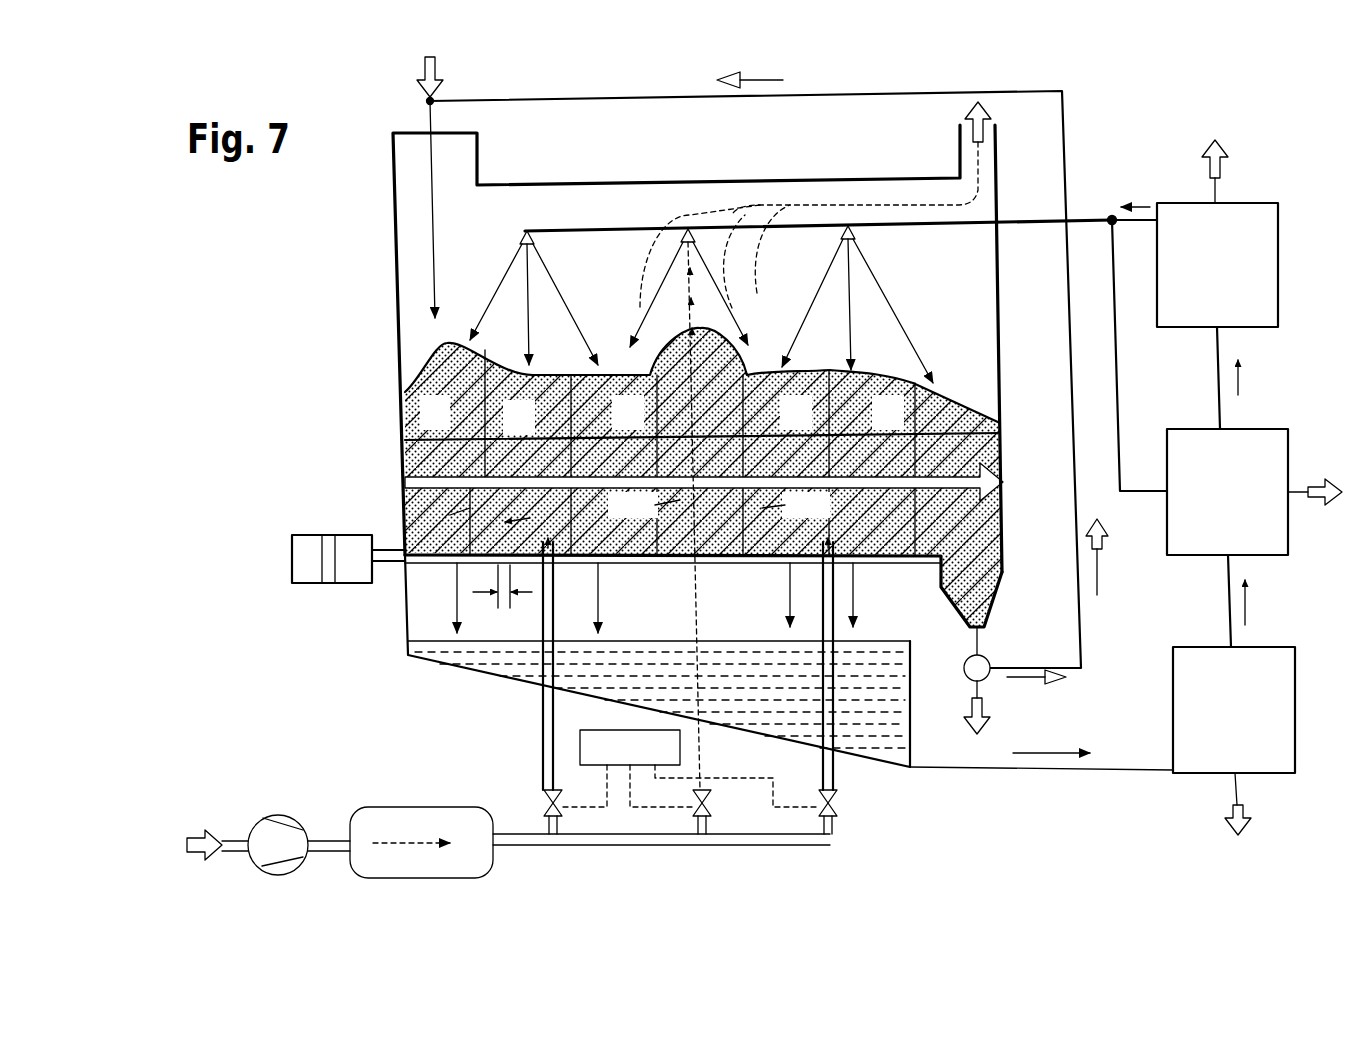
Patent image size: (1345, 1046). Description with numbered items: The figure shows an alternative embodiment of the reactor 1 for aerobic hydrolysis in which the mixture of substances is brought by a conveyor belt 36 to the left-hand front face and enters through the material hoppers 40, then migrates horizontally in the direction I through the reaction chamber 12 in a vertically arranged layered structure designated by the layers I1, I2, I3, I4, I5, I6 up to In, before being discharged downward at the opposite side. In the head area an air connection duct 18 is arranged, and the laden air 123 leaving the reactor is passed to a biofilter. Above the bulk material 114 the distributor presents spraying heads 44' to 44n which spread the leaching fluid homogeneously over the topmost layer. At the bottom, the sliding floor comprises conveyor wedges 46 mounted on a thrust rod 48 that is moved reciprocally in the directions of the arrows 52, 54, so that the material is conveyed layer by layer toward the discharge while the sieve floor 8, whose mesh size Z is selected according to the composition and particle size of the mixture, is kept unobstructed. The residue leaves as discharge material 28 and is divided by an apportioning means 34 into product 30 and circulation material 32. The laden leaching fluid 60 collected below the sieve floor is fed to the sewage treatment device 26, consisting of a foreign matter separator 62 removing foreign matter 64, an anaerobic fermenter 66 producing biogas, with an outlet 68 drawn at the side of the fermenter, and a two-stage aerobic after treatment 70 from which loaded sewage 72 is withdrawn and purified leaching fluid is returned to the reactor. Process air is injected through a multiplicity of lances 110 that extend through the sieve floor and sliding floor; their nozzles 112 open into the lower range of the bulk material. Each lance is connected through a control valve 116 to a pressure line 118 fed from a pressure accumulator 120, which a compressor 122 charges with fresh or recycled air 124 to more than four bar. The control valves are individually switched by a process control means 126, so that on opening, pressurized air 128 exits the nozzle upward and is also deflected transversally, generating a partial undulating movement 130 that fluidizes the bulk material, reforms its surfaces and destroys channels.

The reactor 1 is at (393, 260).
The sieve floor 8 is at (440, 568).
The reaction chamber 12 is at (960, 332).
The air connection duct 18 is at (990, 163).
The sewage treatment device 26 is at (1290, 195).
The discharge material 28 is at (1002, 575).
The product 30 is at (995, 712).
The circulation material 32 is at (1100, 565).
The apportioning means 34 is at (982, 662).
The conveyor belt 36 is at (487, 100).
The material hopper 40 is at (433, 298).
The spraying head 44' is at (783, 290).
The spraying head 44n is at (856, 240).
The conveyor wedge 46 is at (630, 568).
The thrust rod 48 is at (576, 565).
The arrow 52 is at (442, 522).
The arrow 54 is at (533, 515).
The laden leaching fluid 60 is at (912, 710).
The foreign matter separator 62 is at (1249, 734).
The foreign matter 64 is at (1225, 825).
The anaerobic fermenter 66 is at (1242, 514).
The outlet 68 is at (1320, 508).
The two-stage aerobic after treatment 70 is at (1232, 288).
The loaded sewage 72 is at (1205, 165).
The lance 110 is at (570, 665).
The nozzle 112 is at (508, 596).
The bulk material 114 is at (410, 398).
The control valve 116 is at (548, 805).
The pressure line 118 is at (835, 838).
The pressure accumulator 120 is at (357, 807).
The compressor 122 is at (278, 815).
The laden air 123 is at (965, 108).
The air 124 is at (196, 830).
The process control means 126 is at (600, 750).
The pressurized air 128 is at (796, 505).
The undulating movement 130 is at (644, 505).
The horizontal direction I is at (402, 458).
The layer I1 is at (435, 413).
The layer I2 is at (519, 417).
The layer I3 is at (628, 412).
The layer I4 is at (757, 368).
The layer I5 is at (796, 412).
The layer I6 is at (888, 412).
The layer In is at (962, 384).
The mesh size Z is at (498, 603).